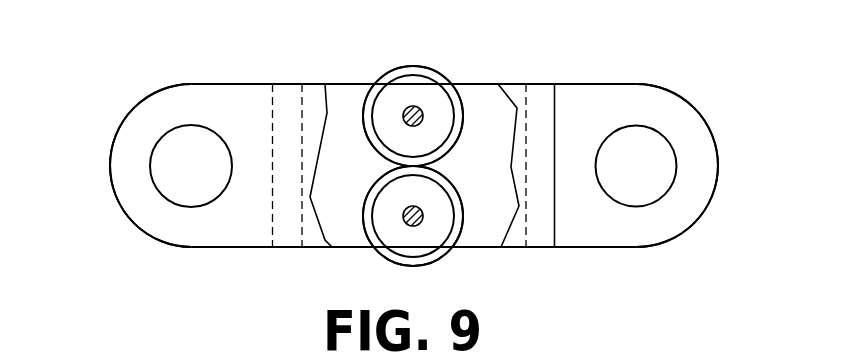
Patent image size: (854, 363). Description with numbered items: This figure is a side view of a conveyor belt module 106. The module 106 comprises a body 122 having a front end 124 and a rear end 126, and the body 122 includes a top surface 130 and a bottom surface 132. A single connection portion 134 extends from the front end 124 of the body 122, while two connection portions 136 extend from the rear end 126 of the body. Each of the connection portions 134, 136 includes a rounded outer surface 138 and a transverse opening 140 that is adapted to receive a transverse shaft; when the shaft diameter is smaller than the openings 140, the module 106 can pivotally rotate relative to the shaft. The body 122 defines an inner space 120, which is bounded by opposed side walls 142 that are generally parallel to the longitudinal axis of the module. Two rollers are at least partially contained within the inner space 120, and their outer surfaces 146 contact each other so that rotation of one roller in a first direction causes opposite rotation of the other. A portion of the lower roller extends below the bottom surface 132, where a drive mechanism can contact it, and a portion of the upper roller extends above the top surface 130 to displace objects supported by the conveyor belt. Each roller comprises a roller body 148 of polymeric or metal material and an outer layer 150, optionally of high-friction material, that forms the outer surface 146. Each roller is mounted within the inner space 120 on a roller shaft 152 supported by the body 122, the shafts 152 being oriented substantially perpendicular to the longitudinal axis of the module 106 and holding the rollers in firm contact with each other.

The conveyor belt module 106 is at (697, 82).
The inner space 120 is at (338, 93).
The body 122 is at (227, 98).
The front end 124 is at (582, 107).
The rear end 126 is at (253, 234).
The top surface 130 is at (487, 82).
The bottom surface 132 is at (568, 248).
The connection portion 134 is at (690, 202).
The connection portions 136 is at (138, 202).
The rounded outer surface 138 is at (132, 110).
The transverse opening 140 is at (178, 167).
The side walls 142 is at (302, 232).
The outer surfaces 146 is at (397, 70).
The roller body 148 is at (391, 193).
The outer layer 150 is at (448, 76).
The roller shaft 152 is at (418, 207).